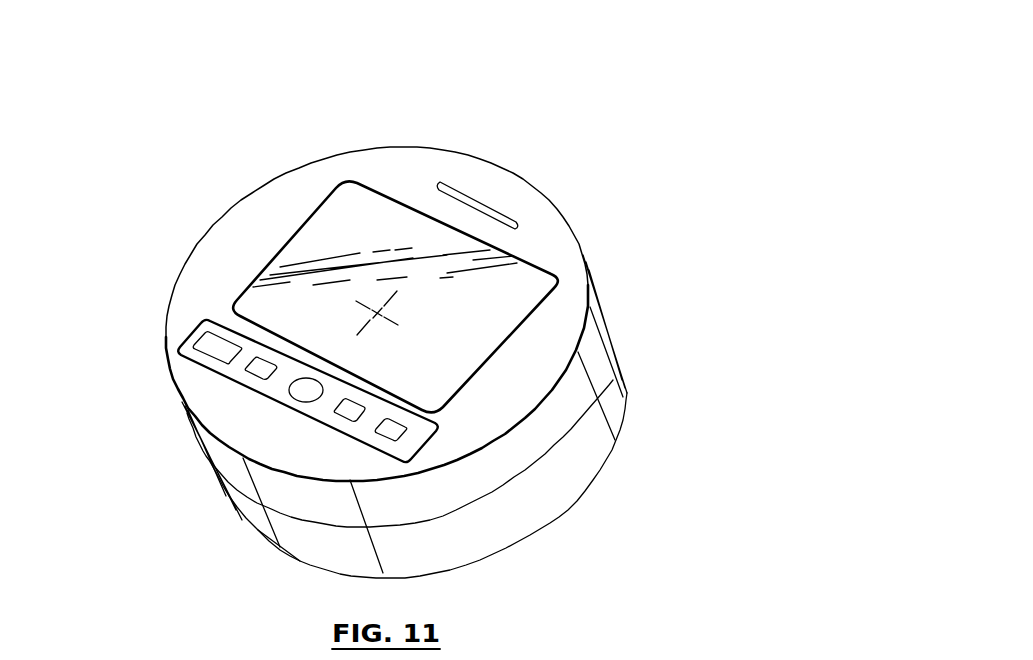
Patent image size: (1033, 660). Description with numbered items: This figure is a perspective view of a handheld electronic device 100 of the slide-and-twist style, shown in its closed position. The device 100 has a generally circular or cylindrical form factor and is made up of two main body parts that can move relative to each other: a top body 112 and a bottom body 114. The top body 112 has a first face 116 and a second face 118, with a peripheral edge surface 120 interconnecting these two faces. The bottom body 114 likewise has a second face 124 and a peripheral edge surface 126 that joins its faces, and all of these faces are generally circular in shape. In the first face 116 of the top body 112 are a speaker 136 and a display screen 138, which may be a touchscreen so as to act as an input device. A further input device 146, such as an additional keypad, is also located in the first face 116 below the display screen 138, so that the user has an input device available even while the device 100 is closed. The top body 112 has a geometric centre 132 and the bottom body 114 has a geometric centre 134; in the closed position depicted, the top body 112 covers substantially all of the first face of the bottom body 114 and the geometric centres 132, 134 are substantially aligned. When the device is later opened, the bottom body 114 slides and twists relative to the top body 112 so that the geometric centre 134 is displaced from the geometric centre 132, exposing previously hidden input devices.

The handheld electronic device 100 is at (643, 155).
The top body 112 is at (594, 278).
The bottom body 114 is at (615, 333).
The first face 116 is at (420, 168).
The second face 118 is at (628, 419).
The peripheral edge surface 120 is at (513, 476).
The second face 124 is at (567, 510).
The peripheral edge surface 126 is at (480, 551).
The geometric centre 132 is at (364, 307).
The geometric centre 134 is at (377, 313).
The speaker 136 is at (495, 210).
The display screen 138 is at (473, 328).
The further input device 146 is at (185, 346).